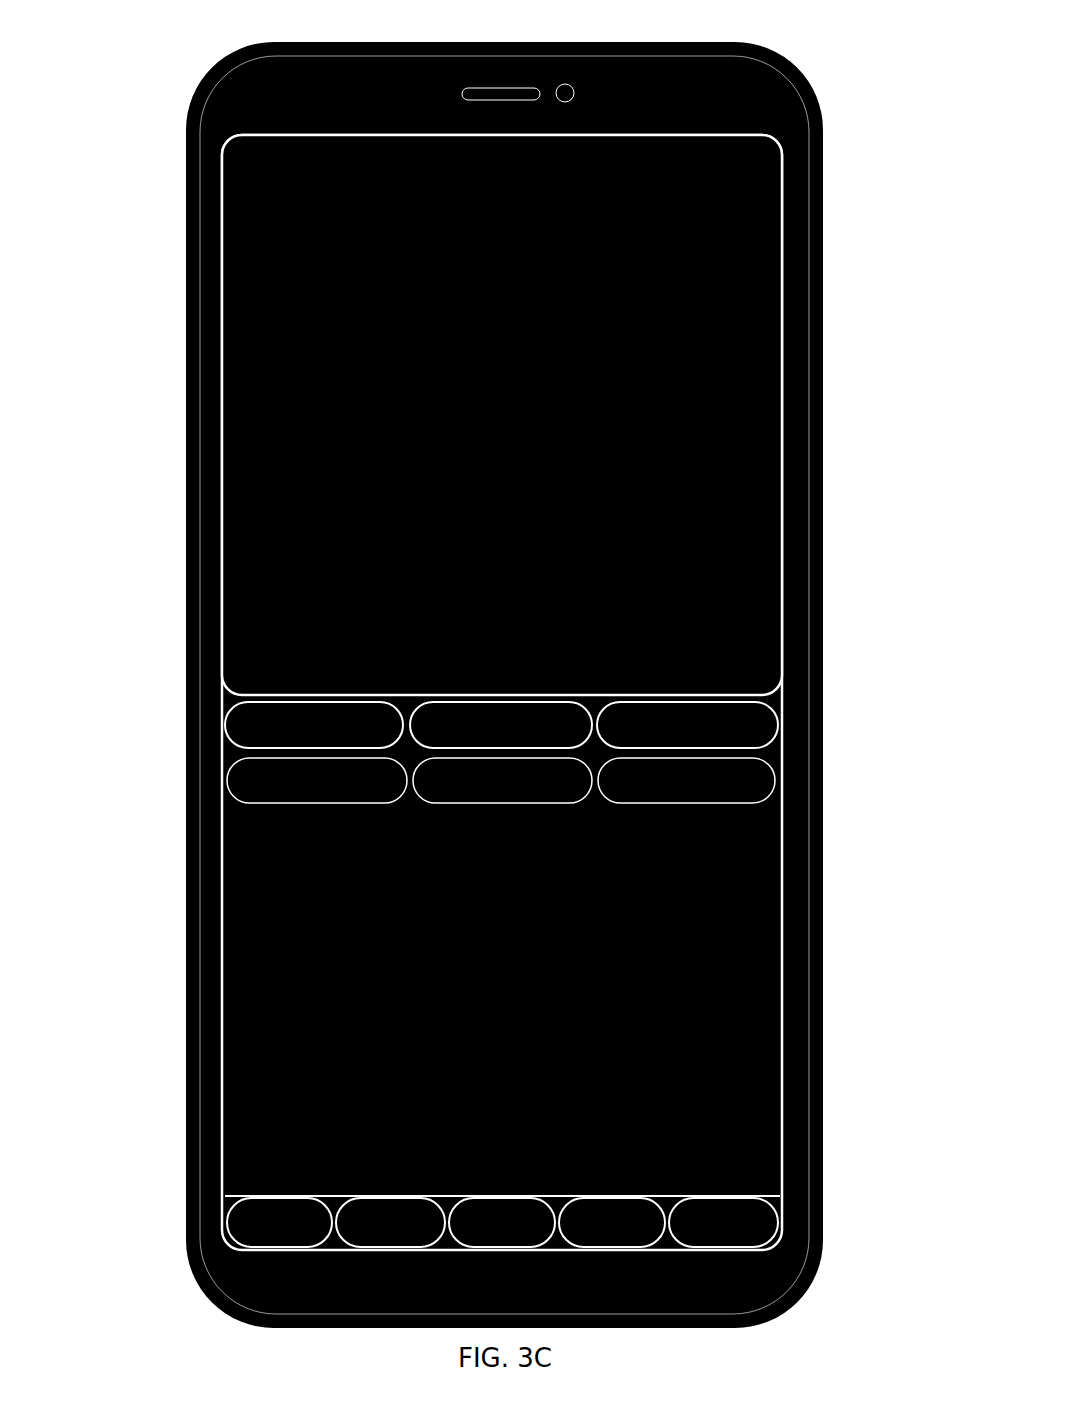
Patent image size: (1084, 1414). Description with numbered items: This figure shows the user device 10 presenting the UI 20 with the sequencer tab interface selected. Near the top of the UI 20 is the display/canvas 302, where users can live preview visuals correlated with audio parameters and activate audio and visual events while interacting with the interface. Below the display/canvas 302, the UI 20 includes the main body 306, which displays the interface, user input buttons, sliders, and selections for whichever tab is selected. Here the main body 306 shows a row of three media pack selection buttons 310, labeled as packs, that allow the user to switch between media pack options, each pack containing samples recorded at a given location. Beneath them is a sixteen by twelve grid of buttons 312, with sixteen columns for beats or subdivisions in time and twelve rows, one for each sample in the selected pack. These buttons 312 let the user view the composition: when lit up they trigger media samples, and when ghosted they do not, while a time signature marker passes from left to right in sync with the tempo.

The user device 10 is at (504, 664).
The display/canvas 302 is at (780, 527).
The media pack selection buttons 310 is at (780, 758).
The sequencer grid buttons 312 is at (780, 908).
The main body 306 is at (770, 1065).
The UI 20 is at (232, 797).